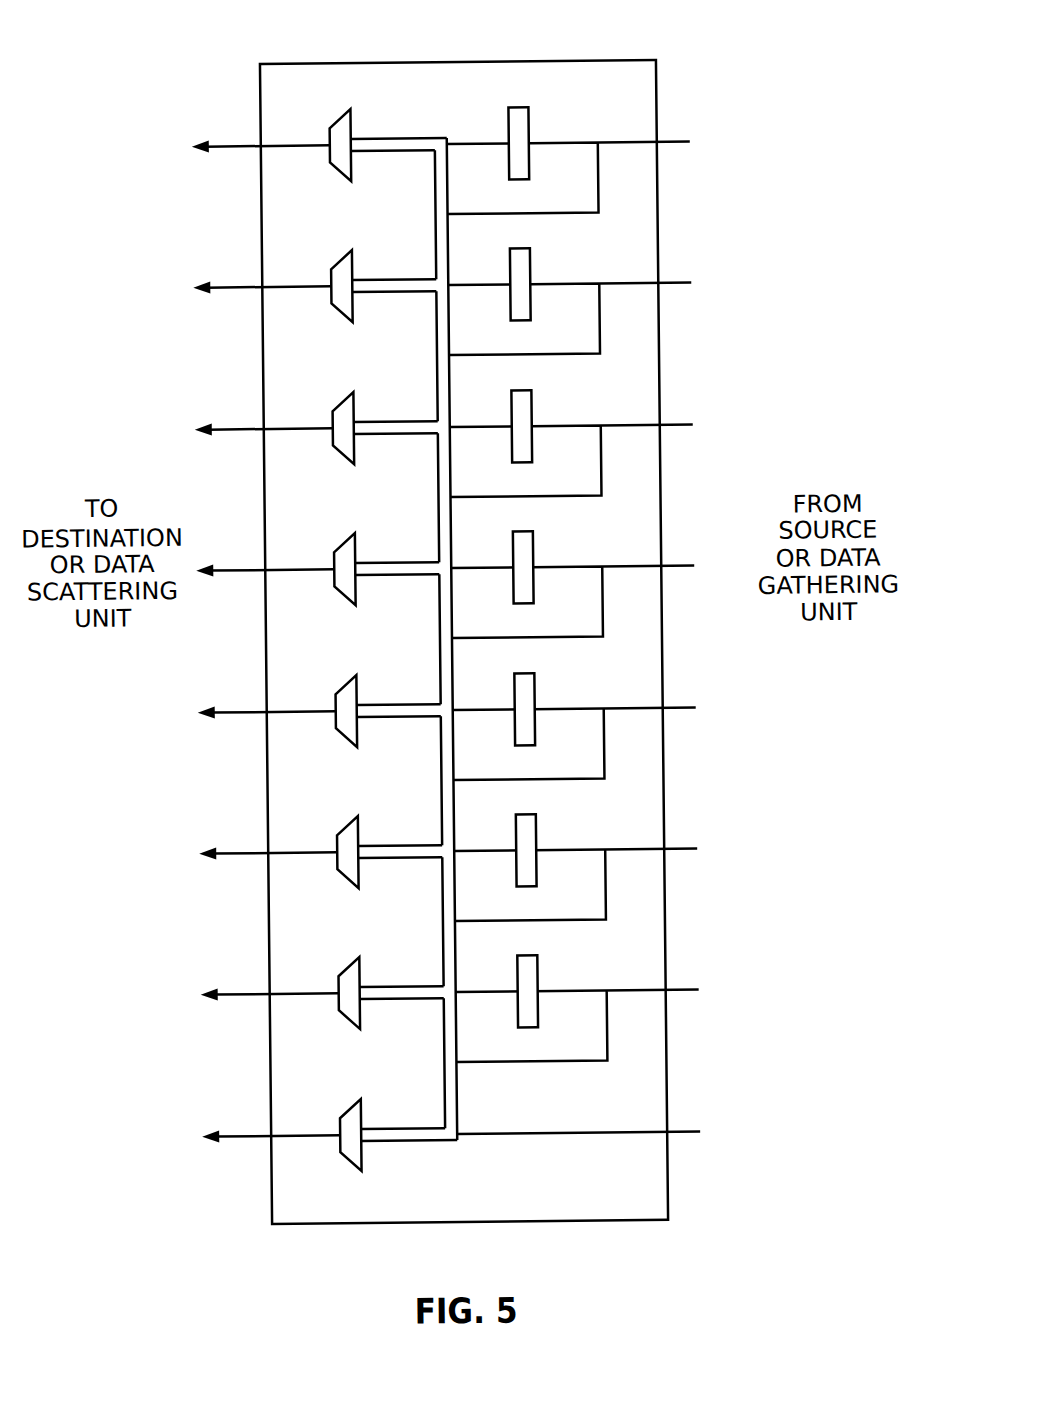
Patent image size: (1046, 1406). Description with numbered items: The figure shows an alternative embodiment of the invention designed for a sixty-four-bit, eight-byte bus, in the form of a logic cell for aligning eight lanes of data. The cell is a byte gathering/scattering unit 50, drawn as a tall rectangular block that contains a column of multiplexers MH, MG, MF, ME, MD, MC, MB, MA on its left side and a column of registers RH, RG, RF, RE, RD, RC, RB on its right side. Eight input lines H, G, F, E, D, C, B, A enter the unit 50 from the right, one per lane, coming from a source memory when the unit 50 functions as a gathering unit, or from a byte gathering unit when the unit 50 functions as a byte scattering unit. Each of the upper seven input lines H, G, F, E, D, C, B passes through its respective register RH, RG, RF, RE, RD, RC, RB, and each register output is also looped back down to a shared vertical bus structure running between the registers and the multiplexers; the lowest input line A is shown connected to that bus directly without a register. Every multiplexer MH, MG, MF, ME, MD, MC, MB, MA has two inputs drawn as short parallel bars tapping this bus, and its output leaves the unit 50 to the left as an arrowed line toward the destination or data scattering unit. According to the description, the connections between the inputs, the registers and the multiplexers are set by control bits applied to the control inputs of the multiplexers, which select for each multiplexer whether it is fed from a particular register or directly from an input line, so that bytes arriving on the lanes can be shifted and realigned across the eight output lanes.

The byte gathering/scattering unit 50 is at (533, 60).
The multiplexer MH is at (357, 128).
The multiplexer MG is at (357, 269).
The multiplexer MF is at (357, 411).
The multiplexer ME is at (357, 552).
The multiplexer MD is at (357, 694).
The multiplexer MC is at (357, 835).
The multiplexer MB is at (357, 976).
The multiplexer MA is at (357, 1118).
The register RH is at (534, 134).
The register RG is at (534, 275).
The register RF is at (534, 417).
The register RE is at (534, 558).
The register RD is at (534, 700).
The register RC is at (534, 841).
The register RB is at (534, 982).
The input line H is at (683, 144).
The input line G is at (683, 285).
The input line F is at (683, 427).
The input line E is at (683, 568).
The input line D is at (683, 710).
The input line C is at (683, 851).
The input line B is at (683, 992).
The input line A is at (683, 1134).